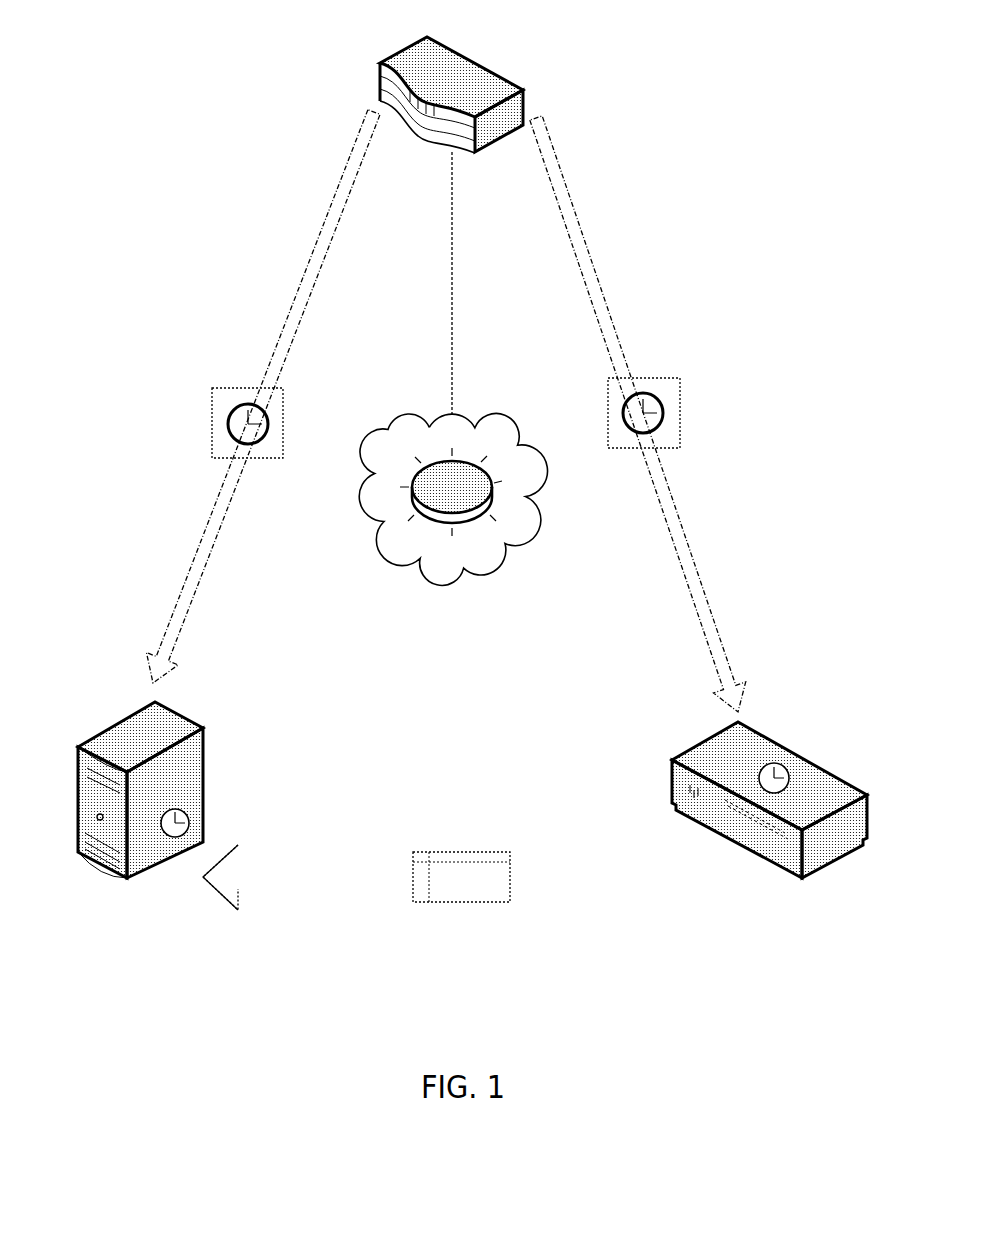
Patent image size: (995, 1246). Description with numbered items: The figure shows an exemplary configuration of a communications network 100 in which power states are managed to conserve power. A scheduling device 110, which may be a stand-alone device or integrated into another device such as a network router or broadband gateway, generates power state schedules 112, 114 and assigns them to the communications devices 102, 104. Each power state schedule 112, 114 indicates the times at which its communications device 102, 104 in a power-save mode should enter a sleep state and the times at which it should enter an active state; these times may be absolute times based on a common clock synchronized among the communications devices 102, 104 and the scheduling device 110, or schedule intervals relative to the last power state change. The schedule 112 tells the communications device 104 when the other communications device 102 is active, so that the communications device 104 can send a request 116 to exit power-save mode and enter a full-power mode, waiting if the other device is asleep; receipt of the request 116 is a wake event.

The network 100 is at (496, 408).
The communications device 102 is at (113, 722).
The communications device 104 is at (790, 748).
The scheduling device 110 is at (495, 84).
The power state schedule 112 is at (215, 388).
The power state schedule 114 is at (672, 378).
The request 116 is at (460, 905).